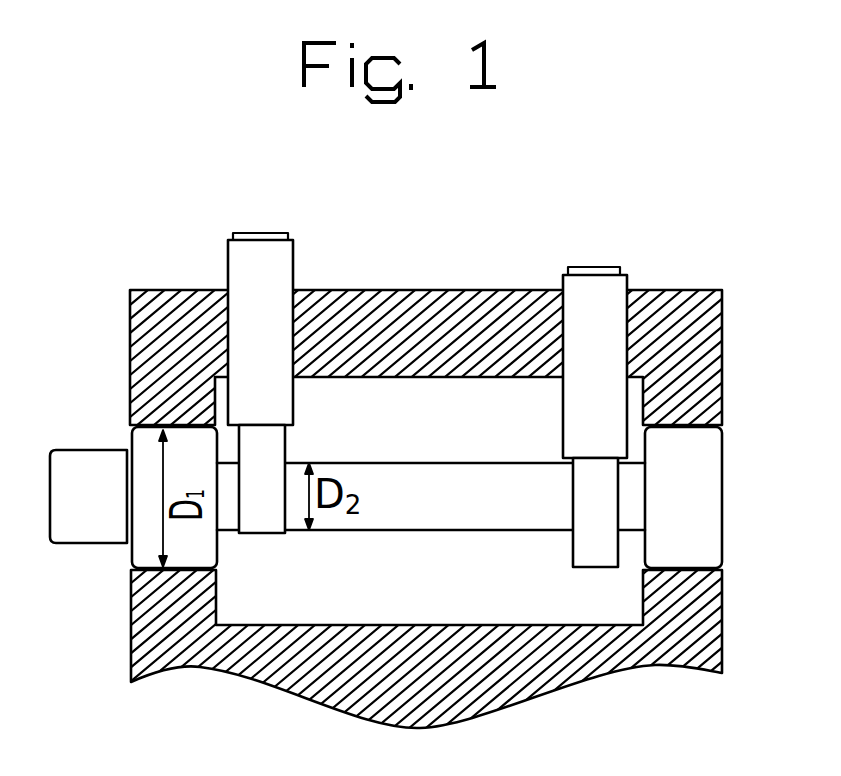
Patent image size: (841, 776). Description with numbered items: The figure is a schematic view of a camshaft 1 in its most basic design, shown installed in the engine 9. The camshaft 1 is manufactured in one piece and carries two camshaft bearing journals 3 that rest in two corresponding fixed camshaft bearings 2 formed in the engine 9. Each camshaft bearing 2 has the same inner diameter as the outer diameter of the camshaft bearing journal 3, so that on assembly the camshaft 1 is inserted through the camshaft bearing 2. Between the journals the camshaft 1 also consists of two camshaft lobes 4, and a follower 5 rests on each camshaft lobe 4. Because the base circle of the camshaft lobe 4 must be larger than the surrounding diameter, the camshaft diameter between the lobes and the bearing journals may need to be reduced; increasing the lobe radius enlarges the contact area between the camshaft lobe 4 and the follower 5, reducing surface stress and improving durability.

The camshaft 1 is at (503, 515).
The camshaft bearing 2 is at (170, 410).
The camshaft bearing journal 3 is at (143, 545).
The camshaft lobe 4 is at (260, 520).
The follower 5 is at (275, 350).
The engine 9 is at (420, 320).